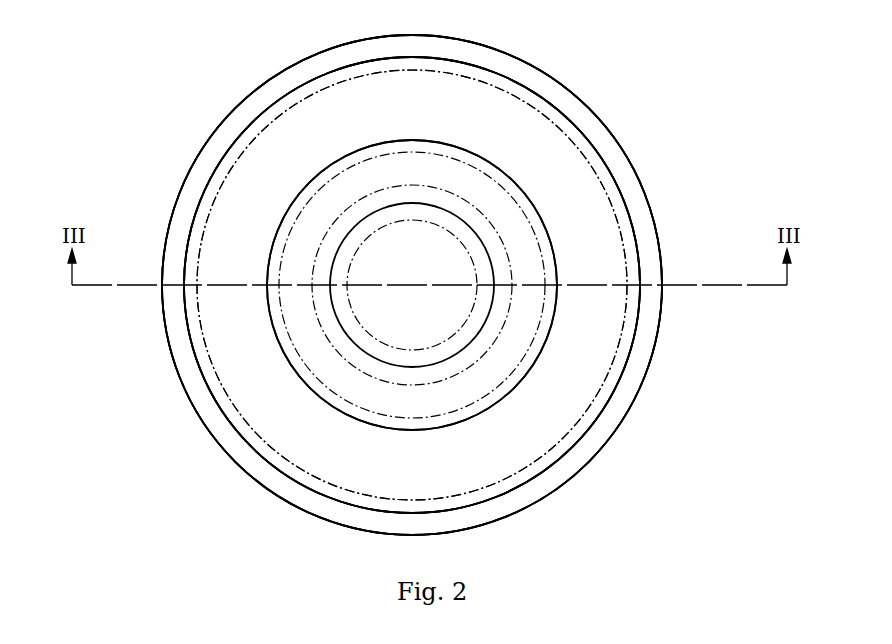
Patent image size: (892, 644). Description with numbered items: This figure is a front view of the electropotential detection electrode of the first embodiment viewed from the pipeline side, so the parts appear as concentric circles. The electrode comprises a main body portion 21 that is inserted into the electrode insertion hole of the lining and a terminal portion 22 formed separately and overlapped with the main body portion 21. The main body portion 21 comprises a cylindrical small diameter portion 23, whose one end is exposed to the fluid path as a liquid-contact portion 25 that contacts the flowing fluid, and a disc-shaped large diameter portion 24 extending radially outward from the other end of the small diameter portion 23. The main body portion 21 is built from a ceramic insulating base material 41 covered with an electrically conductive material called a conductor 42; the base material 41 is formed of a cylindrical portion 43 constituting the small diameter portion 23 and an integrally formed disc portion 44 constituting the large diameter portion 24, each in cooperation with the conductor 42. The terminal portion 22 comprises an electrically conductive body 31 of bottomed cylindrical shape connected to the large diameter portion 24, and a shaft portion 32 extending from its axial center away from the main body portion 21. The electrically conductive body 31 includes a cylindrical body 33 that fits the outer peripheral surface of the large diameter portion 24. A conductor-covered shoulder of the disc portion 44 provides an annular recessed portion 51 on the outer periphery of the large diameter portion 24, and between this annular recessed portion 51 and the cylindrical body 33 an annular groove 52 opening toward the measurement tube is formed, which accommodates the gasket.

The main body portion 21 is at (292, 78).
The terminal portion 22 is at (190, 149).
The small diameter portion 23 is at (443, 205).
The large diameter portion 24 is at (508, 193).
The liquid-contact portion 25 is at (455, 322).
The electrically conductive body 31 is at (178, 192).
The cylindrical body 33 is at (178, 192).
The shaft portion 32 is at (312, 312).
The base material 41 is at (262, 107).
The conductor 42 is at (260, 153).
The cylindrical portion 43 is at (587, 152).
The disc portion 44 is at (630, 180).
The annular recessed portion 51 is at (320, 413).
The annular groove 52 is at (252, 405).